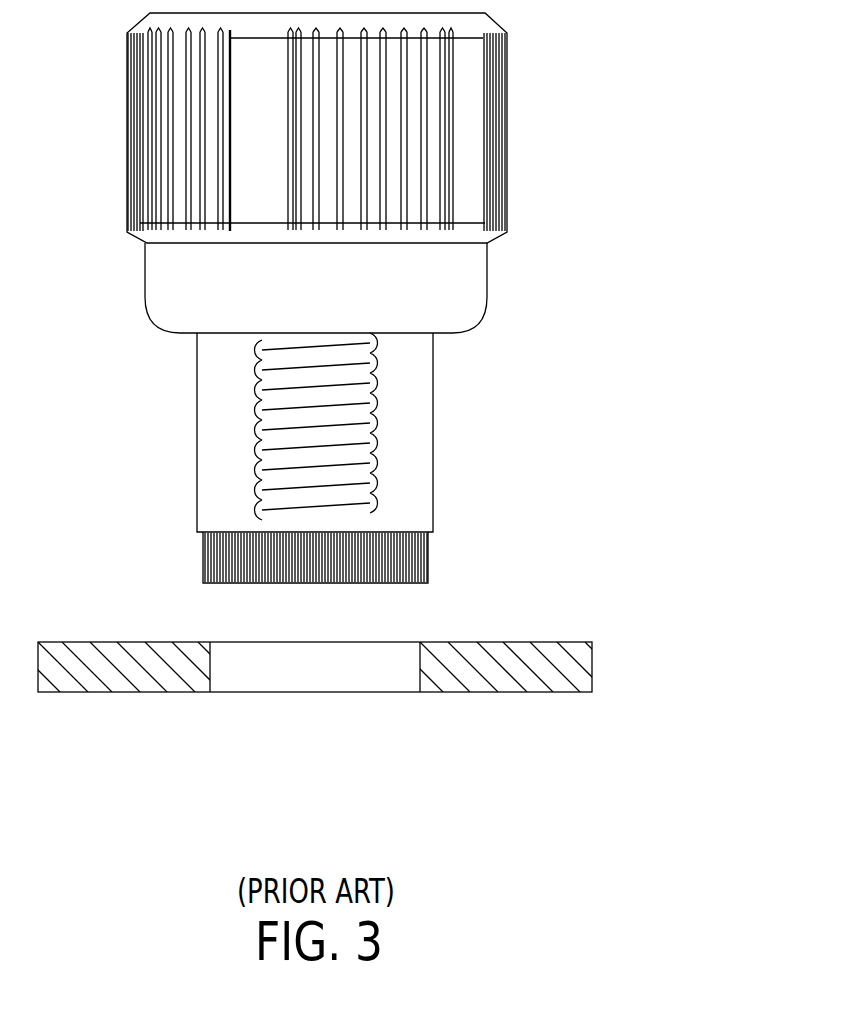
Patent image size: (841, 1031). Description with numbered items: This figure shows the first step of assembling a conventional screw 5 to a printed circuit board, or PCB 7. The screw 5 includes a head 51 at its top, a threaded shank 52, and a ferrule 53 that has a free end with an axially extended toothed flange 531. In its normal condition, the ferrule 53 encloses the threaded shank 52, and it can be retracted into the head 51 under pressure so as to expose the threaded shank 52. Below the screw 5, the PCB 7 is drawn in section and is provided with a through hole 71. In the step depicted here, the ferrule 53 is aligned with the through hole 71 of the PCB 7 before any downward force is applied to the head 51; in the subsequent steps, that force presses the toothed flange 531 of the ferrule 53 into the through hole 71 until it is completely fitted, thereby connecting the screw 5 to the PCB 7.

The screw 5 is at (370, 298).
The head 51 is at (477, 137).
The threaded shank 52 is at (387, 442).
The ferrule 53 is at (195, 390).
The toothed flange 531 is at (200, 543).
The PCB 7 is at (379, 693).
The through hole 71 is at (243, 670).